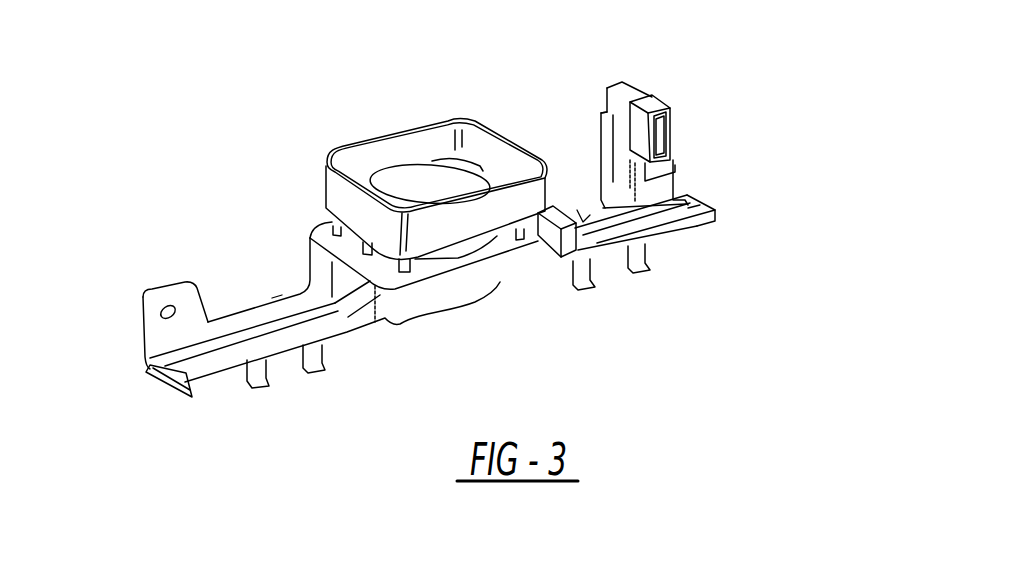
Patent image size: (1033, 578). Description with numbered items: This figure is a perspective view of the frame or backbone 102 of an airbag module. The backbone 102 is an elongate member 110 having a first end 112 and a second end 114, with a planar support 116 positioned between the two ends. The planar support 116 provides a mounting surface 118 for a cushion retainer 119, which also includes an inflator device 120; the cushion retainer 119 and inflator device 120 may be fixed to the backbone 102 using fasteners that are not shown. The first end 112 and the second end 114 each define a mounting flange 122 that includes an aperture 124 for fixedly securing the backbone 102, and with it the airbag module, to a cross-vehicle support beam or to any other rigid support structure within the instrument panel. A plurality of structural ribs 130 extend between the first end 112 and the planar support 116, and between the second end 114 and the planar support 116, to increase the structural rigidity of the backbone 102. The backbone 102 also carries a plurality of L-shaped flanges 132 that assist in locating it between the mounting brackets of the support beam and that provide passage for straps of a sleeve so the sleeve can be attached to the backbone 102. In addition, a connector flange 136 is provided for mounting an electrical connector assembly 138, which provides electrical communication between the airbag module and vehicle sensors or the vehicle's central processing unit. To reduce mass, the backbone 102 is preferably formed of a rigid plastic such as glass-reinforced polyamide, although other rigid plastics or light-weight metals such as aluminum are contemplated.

The frame or backbone 102 is at (235, 423).
The elongate member 110 is at (345, 343).
The first end 112 is at (143, 372).
The second end 114 is at (717, 223).
The planar support 116 is at (483, 258).
The mounting surface 118 is at (515, 247).
The cushion retainer 119 is at (358, 147).
The inflator device 120 is at (411, 182).
The mounting flange 122 is at (200, 285).
The aperture 124 is at (160, 302).
The structural ribs 130 is at (272, 302).
The L-shaped flanges 132 is at (323, 376).
The connector flange 136 is at (647, 192).
The electrical connector assembly 138 is at (653, 91).